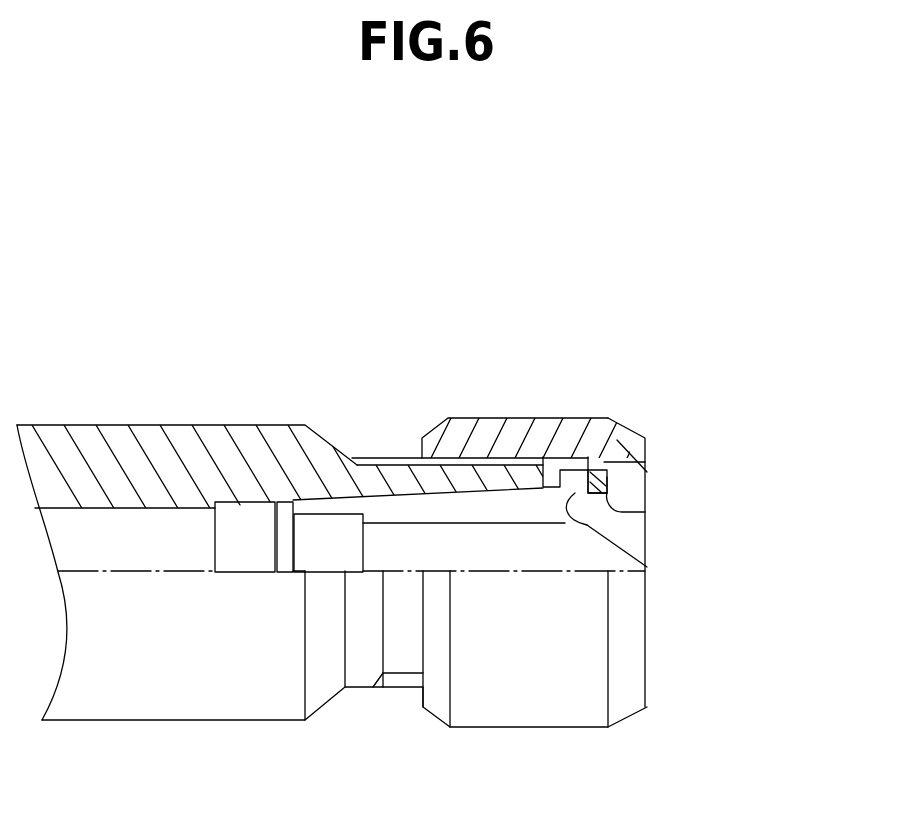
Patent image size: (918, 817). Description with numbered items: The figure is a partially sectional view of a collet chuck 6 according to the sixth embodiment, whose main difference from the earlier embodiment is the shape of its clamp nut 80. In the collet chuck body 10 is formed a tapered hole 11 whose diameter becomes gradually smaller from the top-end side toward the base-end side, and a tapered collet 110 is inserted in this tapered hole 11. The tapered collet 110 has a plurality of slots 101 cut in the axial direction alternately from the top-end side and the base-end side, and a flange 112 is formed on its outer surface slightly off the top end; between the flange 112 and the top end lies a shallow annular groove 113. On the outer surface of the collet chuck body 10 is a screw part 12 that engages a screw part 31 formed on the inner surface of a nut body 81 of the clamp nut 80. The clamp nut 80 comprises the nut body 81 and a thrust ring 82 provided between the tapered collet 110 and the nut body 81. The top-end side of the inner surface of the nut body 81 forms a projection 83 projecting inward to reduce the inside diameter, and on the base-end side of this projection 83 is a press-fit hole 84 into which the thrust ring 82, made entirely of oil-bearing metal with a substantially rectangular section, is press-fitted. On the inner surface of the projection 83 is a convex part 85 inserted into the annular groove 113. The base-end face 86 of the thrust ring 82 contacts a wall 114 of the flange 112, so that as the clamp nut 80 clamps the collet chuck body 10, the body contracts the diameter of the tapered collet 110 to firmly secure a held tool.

The collet chuck 6 is at (630, 176).
The collet chuck body 10 is at (183, 440).
The tapered hole 11 is at (363, 500).
The slots 101 is at (410, 506).
The screw part 12 is at (442, 462).
The screw part 31 is at (470, 462).
The flange 112 is at (567, 477).
The wall 114 is at (580, 470).
The press-fit hole 84 is at (600, 473).
The nut body 81 is at (643, 433).
The projection 83 is at (645, 466).
The thrust ring 82 is at (608, 477).
The clamp nut 80 is at (782, 410).
The convex part 85 is at (612, 487).
The annular groove 113 is at (620, 510).
The tapered collet 110 is at (625, 518).
The base-end face 86 is at (592, 502).